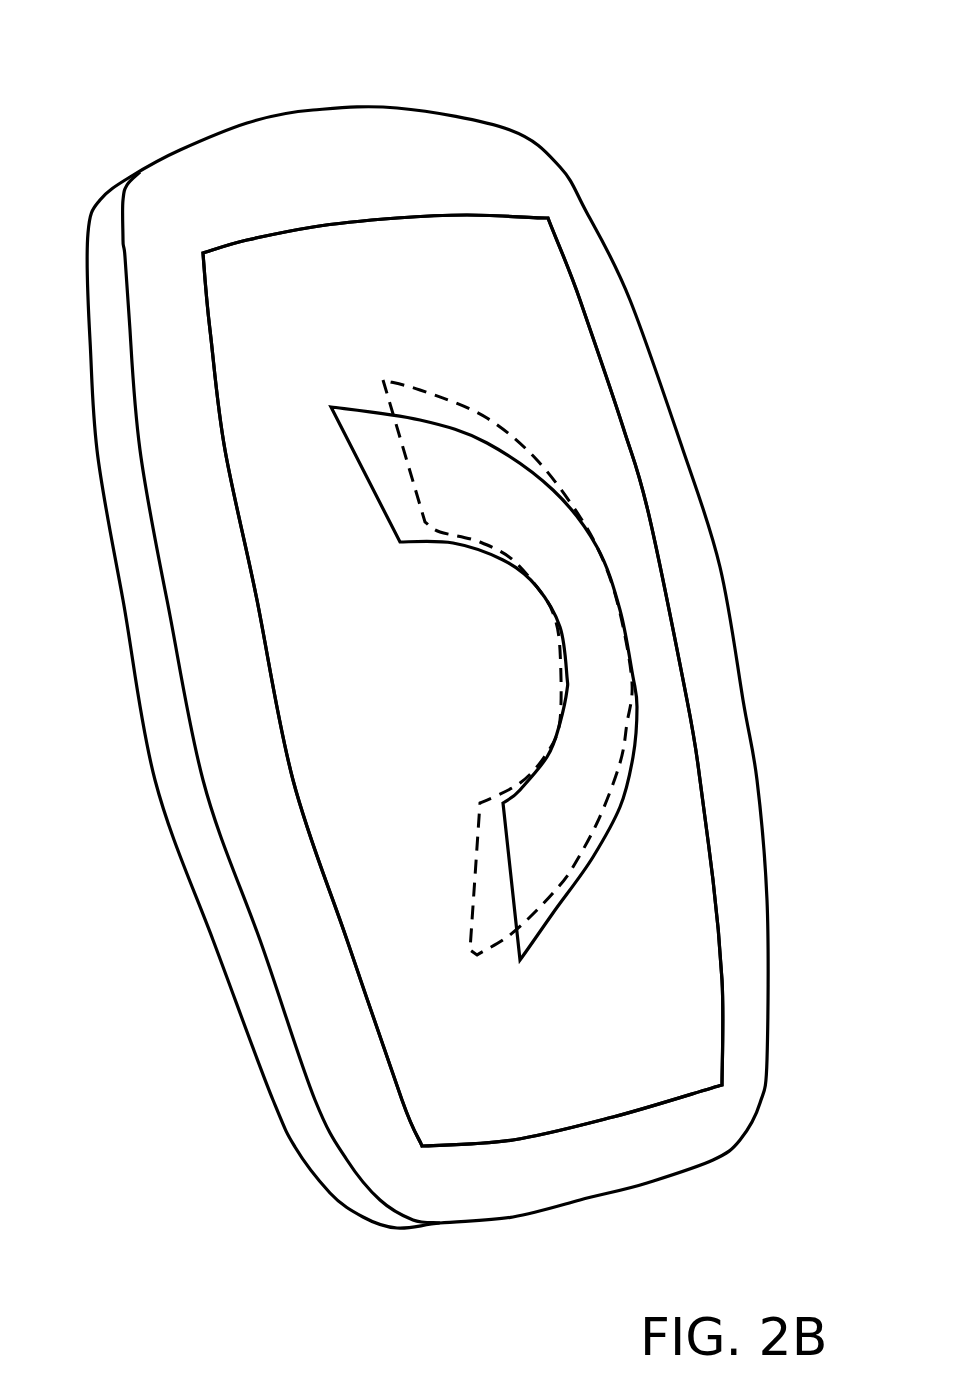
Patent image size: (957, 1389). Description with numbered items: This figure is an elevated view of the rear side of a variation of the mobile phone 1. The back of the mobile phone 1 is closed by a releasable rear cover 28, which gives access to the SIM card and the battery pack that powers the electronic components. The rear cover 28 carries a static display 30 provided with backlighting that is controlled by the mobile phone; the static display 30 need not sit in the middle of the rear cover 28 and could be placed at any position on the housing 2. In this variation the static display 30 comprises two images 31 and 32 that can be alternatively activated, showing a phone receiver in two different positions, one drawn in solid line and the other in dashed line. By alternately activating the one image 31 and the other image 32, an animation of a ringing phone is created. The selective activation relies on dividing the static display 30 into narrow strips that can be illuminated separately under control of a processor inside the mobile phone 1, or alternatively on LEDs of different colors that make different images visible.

The mobile phone 1 is at (581, 102).
The housing 2 is at (120, 522).
The rear cover 28 is at (597, 277).
The static display 30 is at (567, 420).
The image 31 is at (553, 931).
The image 32 is at (470, 905).